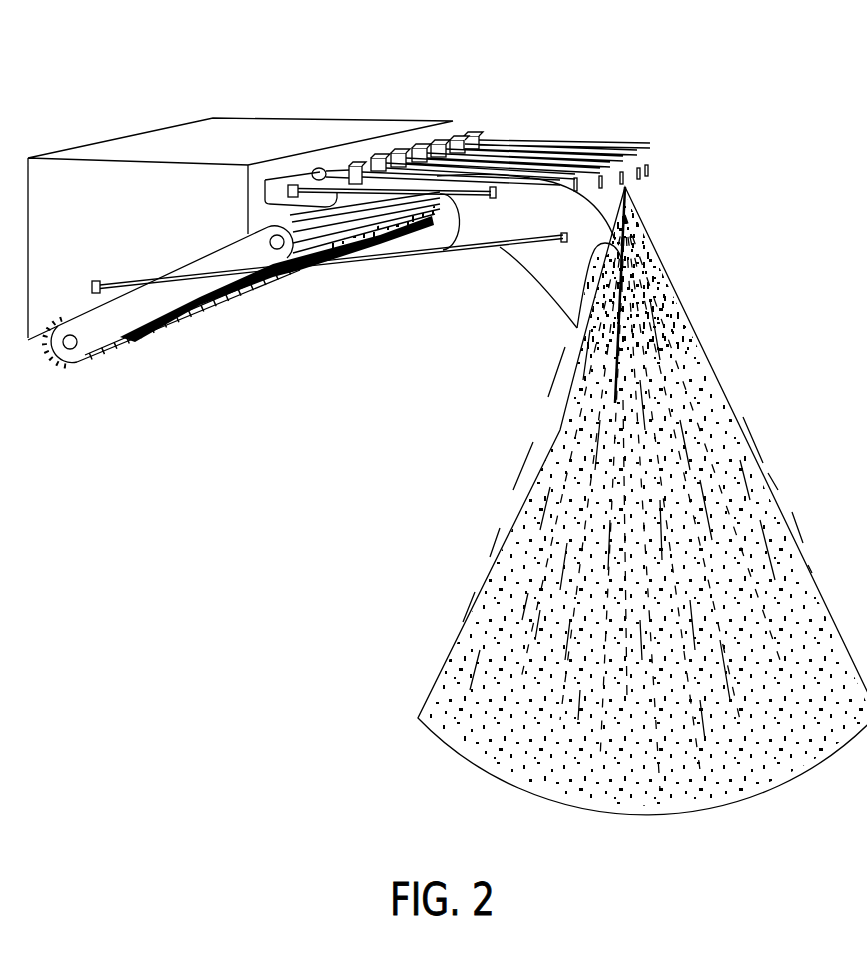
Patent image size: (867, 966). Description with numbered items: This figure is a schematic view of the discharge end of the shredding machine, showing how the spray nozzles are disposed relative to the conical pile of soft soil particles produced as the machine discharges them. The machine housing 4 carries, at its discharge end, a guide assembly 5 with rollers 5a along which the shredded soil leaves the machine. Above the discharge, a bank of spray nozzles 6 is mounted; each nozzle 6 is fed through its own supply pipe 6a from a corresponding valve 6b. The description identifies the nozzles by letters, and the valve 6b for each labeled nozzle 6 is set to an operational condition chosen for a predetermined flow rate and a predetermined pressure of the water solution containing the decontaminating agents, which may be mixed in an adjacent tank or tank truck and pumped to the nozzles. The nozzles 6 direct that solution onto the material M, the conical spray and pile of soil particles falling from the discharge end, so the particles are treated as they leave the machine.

The housing 4 is at (330, 118).
The guide member 5 is at (560, 250).
The rollers 5a is at (450, 197).
The nozzle 6 is at (580, 188).
The supply pipes 6a is at (483, 172).
The valve 6b is at (356, 165).
The spray of material M is at (715, 370).